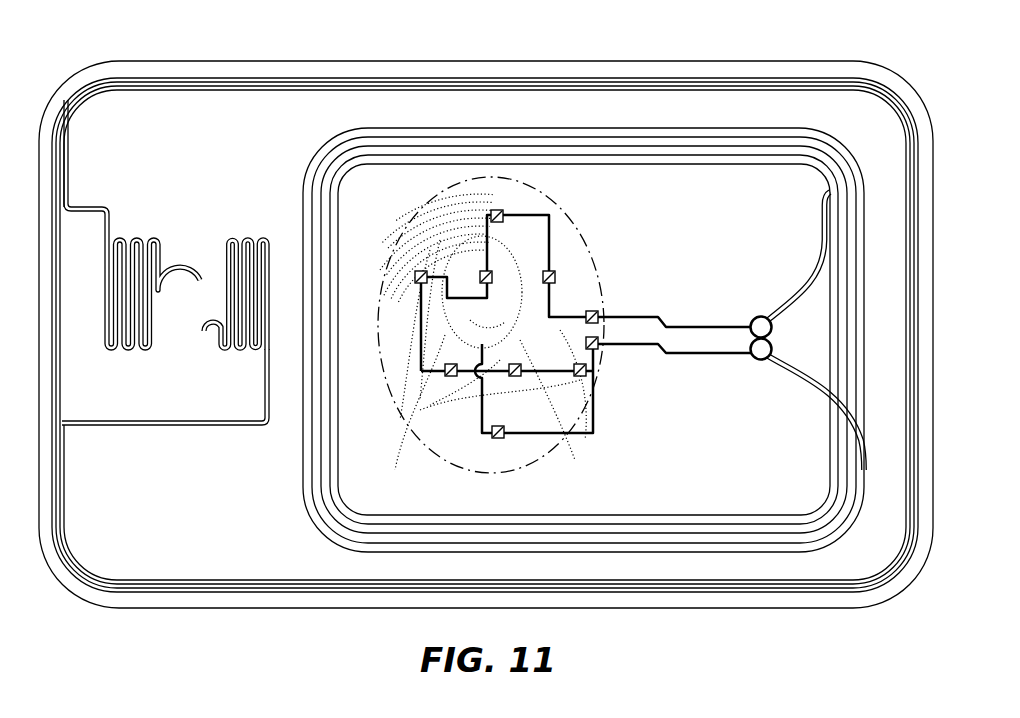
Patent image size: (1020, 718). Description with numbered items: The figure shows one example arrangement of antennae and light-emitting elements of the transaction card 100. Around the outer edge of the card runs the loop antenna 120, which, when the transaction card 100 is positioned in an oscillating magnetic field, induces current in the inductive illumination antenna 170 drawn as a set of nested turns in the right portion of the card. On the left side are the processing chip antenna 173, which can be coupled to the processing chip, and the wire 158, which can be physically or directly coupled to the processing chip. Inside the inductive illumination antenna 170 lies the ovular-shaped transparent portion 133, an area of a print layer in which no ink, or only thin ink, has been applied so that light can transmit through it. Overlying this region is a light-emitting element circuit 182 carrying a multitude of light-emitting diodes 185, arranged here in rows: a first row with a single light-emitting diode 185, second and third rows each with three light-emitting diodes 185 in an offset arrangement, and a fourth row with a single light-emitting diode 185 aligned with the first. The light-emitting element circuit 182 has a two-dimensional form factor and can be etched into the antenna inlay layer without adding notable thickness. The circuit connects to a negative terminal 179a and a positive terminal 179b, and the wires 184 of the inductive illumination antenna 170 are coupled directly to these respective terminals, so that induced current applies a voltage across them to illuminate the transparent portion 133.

The transaction card 100 is at (695, 61).
The loop antenna 120 is at (563, 77).
The transparent portion 133 is at (577, 228).
The wire 158 is at (183, 318).
The inductive illumination antenna 170 is at (638, 512).
The processing chip antenna 173 is at (173, 428).
The negative terminal 179a is at (760, 360).
The positive terminal 179b is at (760, 316).
The light-emitting element circuit 182 is at (396, 262).
The wires 184 is at (810, 334).
The light-emitting diode 185 is at (557, 278).